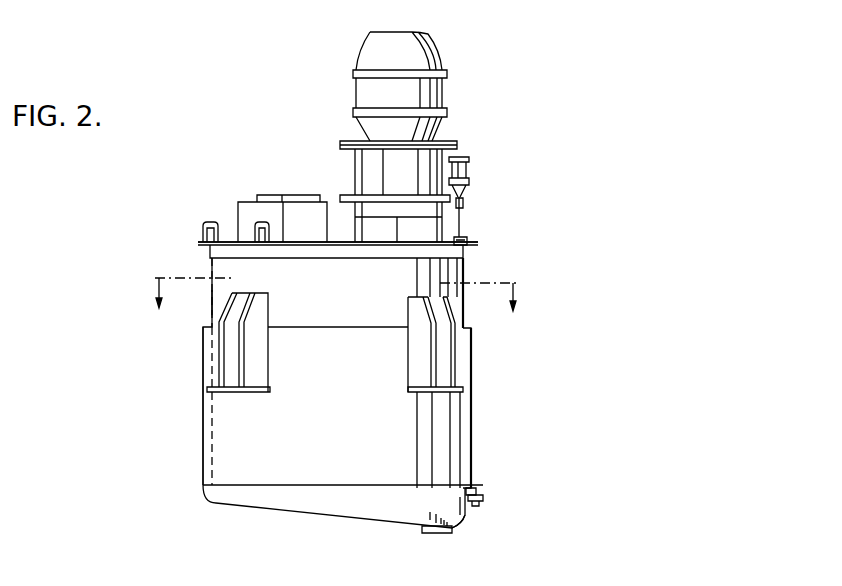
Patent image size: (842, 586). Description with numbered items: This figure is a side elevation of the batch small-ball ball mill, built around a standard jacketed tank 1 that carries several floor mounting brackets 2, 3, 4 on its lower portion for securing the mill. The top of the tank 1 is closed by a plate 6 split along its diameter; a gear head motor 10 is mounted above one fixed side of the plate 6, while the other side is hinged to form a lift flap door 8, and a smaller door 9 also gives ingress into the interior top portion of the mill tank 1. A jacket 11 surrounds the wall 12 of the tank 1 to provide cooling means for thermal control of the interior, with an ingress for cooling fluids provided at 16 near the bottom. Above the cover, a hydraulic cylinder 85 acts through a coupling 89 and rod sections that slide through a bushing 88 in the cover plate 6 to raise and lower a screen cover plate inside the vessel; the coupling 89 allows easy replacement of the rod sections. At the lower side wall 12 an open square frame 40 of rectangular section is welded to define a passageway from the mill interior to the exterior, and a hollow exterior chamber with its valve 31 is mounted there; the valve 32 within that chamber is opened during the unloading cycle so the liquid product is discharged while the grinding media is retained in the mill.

The jacketed tank 1 is at (471, 280).
The floor mounting bracket 2 is at (270, 386).
The floor mounting bracket 3 is at (410, 389).
The floor mounting bracket 4 is at (335, 309).
The plate 6 is at (477, 248).
The lift flap door 8 is at (205, 222).
The smaller door 9 is at (264, 195).
The gear head motor 10 is at (440, 56).
The jacket 11 is at (203, 453).
The wall 12 is at (212, 304).
The cooling fluid ingress 16 is at (443, 534).
The valve 31 is at (477, 506).
The valve 32 is at (475, 488).
The open square frame 40 is at (468, 518).
The hydraulic cylinder 85 is at (470, 172).
The bushing 88 is at (470, 243).
The coupling 89 is at (467, 205).